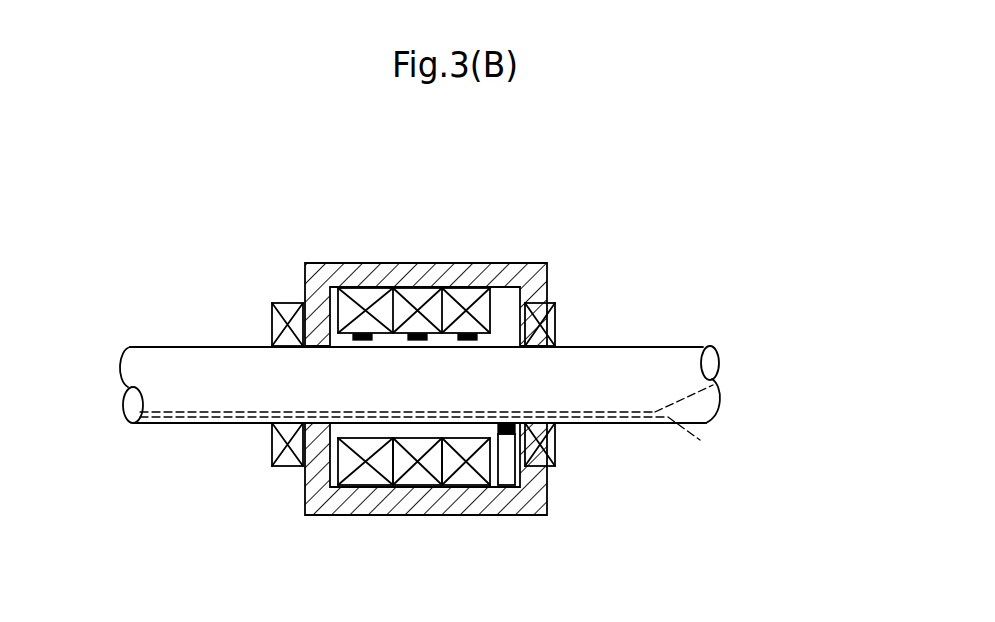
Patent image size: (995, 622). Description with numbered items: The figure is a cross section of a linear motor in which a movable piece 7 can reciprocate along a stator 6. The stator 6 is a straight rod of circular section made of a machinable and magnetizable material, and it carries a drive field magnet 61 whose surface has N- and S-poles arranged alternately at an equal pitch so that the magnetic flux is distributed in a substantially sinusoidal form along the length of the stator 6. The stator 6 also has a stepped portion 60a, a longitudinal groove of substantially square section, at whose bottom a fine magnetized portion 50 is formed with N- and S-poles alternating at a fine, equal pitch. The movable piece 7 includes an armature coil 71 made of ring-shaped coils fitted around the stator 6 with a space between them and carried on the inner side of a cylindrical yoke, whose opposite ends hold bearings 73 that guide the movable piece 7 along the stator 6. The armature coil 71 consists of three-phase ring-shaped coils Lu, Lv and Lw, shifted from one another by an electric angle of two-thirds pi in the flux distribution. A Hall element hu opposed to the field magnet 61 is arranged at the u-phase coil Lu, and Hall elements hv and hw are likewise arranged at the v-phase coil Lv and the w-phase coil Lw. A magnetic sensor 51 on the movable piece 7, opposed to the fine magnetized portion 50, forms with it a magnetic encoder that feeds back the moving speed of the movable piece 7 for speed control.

The movable piece 7 is at (339, 261).
The armature coil 71 is at (365, 290).
The Hall element hw is at (367, 332).
The Hall element hv is at (425, 332).
The Hall element hu is at (472, 332).
The u-phase coil Lu is at (368, 482).
The v-phase coil Lv is at (420, 482).
The w-phase coil Lw is at (467, 482).
The magnetic sensor 51 is at (548, 468).
The bearings 73 is at (287, 302).
The stator 6 is at (170, 345).
The drive field magnet 61 is at (143, 353).
The stepped portion 60a is at (717, 393).
The fine magnetized portion 50 is at (700, 440).